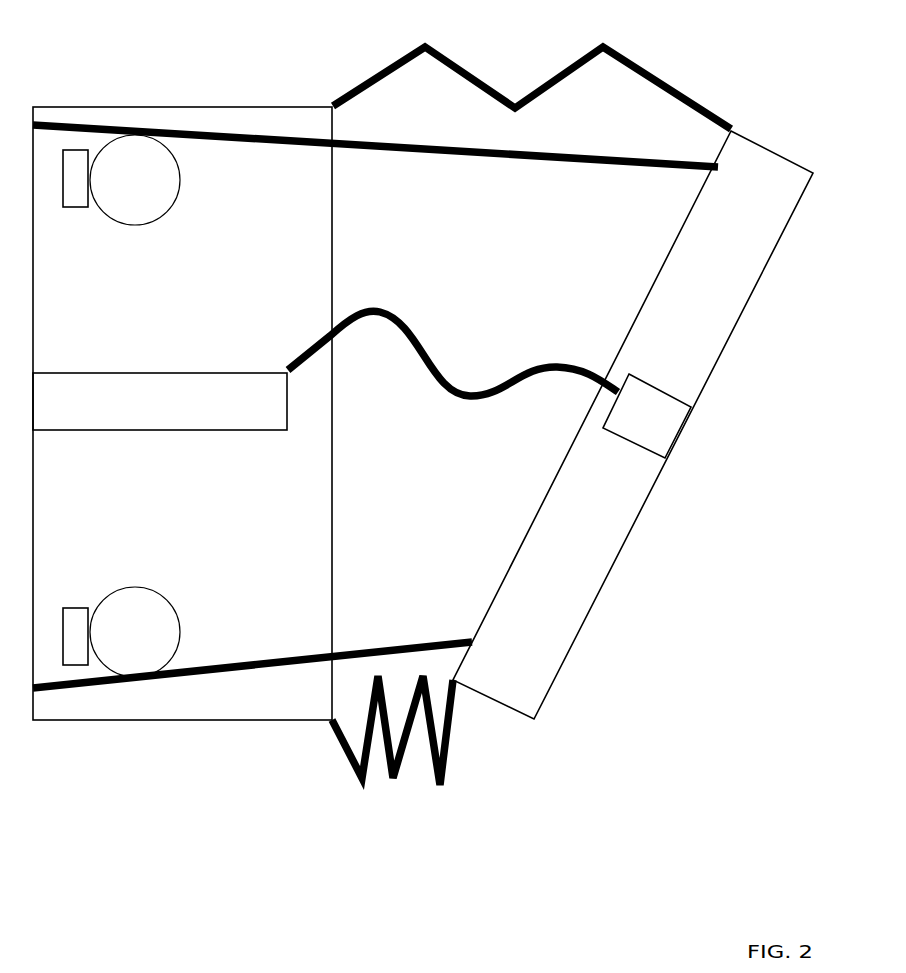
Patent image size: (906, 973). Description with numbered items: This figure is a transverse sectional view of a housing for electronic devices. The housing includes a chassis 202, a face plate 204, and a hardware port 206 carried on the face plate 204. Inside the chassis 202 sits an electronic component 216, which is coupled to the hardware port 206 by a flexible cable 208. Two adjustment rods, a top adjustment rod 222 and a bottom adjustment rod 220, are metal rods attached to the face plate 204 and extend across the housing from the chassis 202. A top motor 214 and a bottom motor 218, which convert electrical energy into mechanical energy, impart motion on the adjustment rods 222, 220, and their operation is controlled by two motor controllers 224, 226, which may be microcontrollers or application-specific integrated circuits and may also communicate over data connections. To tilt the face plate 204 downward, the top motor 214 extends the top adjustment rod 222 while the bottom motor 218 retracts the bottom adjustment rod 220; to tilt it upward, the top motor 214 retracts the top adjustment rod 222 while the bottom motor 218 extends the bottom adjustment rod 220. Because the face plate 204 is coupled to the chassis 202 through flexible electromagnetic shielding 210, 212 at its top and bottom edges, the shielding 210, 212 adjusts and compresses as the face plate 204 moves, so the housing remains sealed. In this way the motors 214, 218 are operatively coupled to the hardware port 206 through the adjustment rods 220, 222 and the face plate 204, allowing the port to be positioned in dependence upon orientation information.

The chassis 202 is at (182, 722).
The face plate 204 is at (553, 692).
The hardware port 206 is at (653, 418).
The flexible cable 208 is at (494, 387).
The flexible electromagnetic shielding 210 is at (476, 78).
The flexible electromagnetic shielding 212 is at (352, 768).
The top motor 214 is at (135, 224).
The electronic component 216 is at (218, 432).
The bottom motor 218 is at (133, 588).
The bottom adjustment rod 220 is at (377, 650).
The top adjustment rod 222 is at (374, 150).
The motor controller 224 is at (73, 208).
The motor controller 226 is at (73, 606).